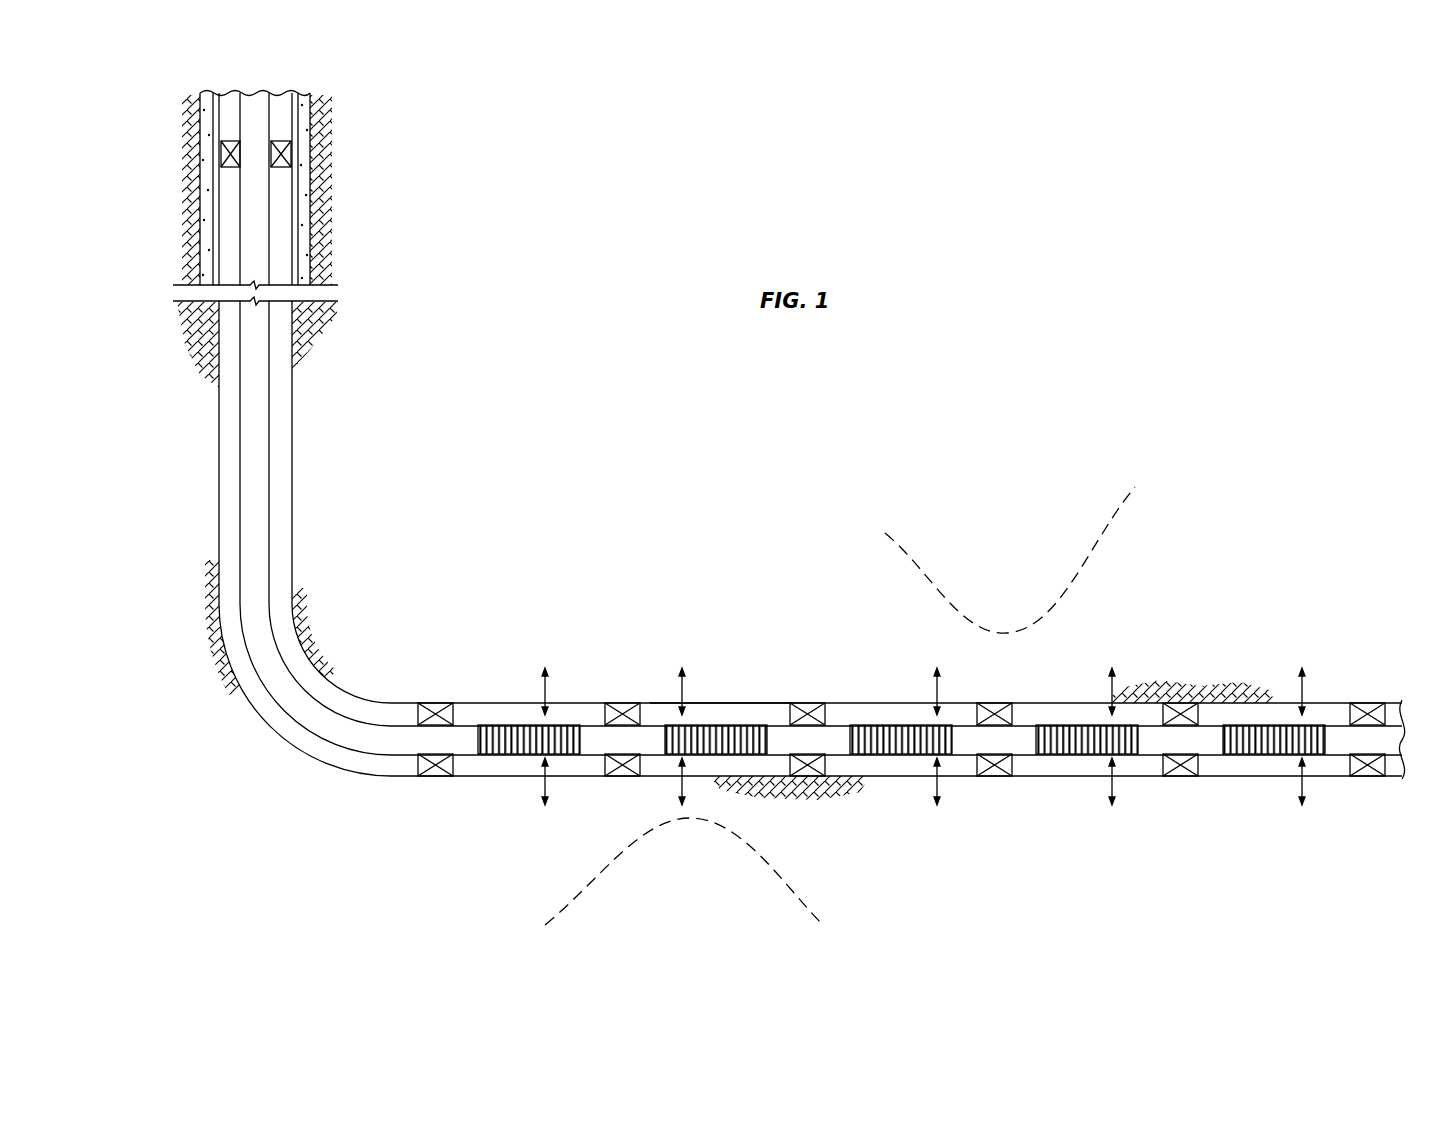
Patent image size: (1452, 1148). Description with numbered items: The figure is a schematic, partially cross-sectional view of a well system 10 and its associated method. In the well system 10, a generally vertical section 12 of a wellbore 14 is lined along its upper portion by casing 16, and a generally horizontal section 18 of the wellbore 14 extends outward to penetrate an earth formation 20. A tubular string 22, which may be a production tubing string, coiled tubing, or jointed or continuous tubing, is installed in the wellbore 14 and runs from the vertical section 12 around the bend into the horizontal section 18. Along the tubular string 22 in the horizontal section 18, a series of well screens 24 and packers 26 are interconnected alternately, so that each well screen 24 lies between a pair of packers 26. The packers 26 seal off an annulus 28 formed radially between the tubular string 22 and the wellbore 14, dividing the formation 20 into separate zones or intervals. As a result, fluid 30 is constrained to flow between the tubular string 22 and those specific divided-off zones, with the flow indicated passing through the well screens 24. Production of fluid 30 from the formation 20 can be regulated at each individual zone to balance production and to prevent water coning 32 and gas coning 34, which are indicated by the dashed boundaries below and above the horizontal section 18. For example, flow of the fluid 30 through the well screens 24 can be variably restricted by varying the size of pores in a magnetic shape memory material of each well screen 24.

The well system 10 is at (508, 340).
The generally vertical section 12 is at (293, 441).
The wellbore 14 is at (292, 393).
The casing 16 is at (298, 229).
The generally horizontal section 18 is at (733, 707).
The earth formation 20 is at (782, 618).
The tubular string 22 is at (271, 467).
The well screen 24 is at (530, 725).
The packer 26 is at (437, 777).
The annulus 28 is at (893, 768).
The fluid 30 is at (548, 692).
The water coning 32 is at (595, 878).
The gas coning 34 is at (1083, 553).